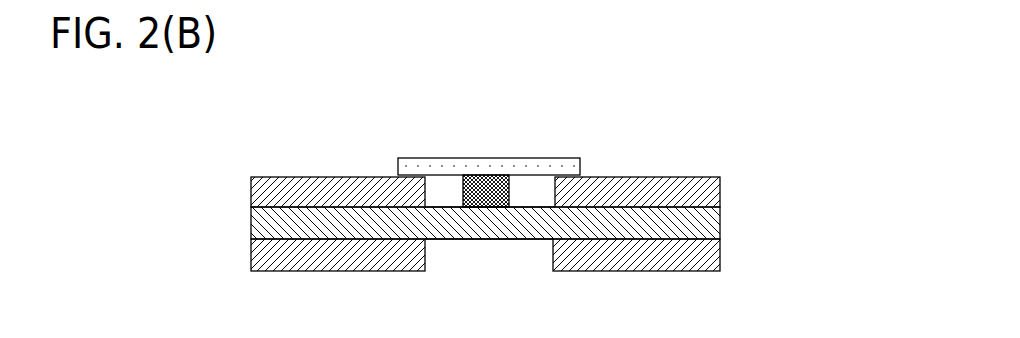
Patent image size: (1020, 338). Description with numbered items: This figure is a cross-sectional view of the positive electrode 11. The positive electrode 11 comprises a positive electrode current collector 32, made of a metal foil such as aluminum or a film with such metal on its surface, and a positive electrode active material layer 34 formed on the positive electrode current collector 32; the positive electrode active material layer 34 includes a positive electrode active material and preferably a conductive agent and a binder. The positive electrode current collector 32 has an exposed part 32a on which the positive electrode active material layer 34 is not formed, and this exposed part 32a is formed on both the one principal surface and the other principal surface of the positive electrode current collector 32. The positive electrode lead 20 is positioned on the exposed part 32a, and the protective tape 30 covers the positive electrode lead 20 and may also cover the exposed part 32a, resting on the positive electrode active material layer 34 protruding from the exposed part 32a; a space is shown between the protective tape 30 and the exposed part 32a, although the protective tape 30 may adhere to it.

The positive electrode 11 is at (586, 208).
The positive electrode lead 20 is at (498, 177).
The protective tape 30 is at (570, 158).
The positive electrode current collector 32 is at (720, 225).
The exposed part 32a is at (443, 207).
The positive electrode active material layer 34 is at (720, 191).